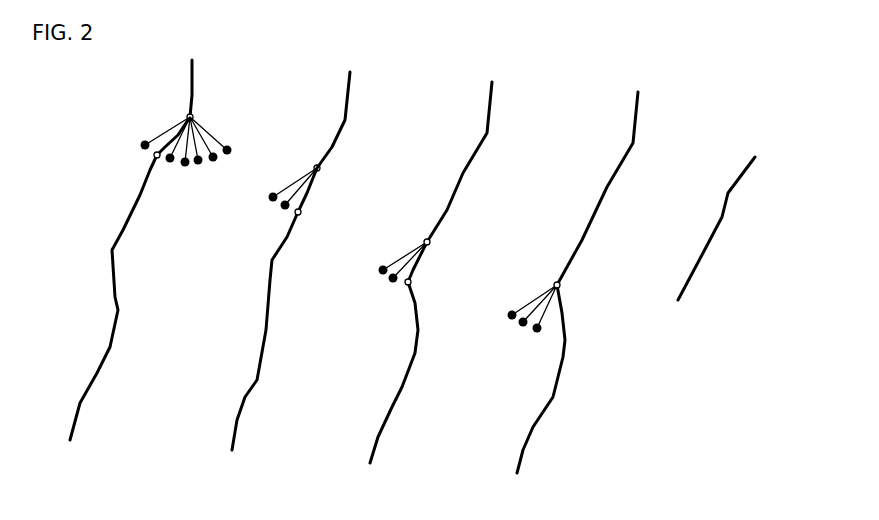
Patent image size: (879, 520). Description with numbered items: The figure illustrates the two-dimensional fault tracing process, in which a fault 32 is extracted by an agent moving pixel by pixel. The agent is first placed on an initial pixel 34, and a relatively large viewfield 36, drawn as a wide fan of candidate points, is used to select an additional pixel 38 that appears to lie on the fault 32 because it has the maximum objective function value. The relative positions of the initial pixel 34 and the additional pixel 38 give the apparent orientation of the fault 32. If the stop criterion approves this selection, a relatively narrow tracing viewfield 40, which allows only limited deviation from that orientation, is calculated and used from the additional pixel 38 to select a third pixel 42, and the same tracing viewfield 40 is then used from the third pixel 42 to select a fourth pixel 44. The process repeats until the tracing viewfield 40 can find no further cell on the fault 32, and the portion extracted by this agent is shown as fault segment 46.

The fault 32 is at (193, 73).
The initial pixel 34 is at (188, 113).
The relatively large viewfield 36 is at (196, 182).
The additional pixel 38 is at (153, 157).
The tracing viewfield 40 is at (270, 214).
The third pixel 42 is at (301, 213).
The fourth pixel 44 is at (411, 283).
The fault segment 46 is at (723, 215).